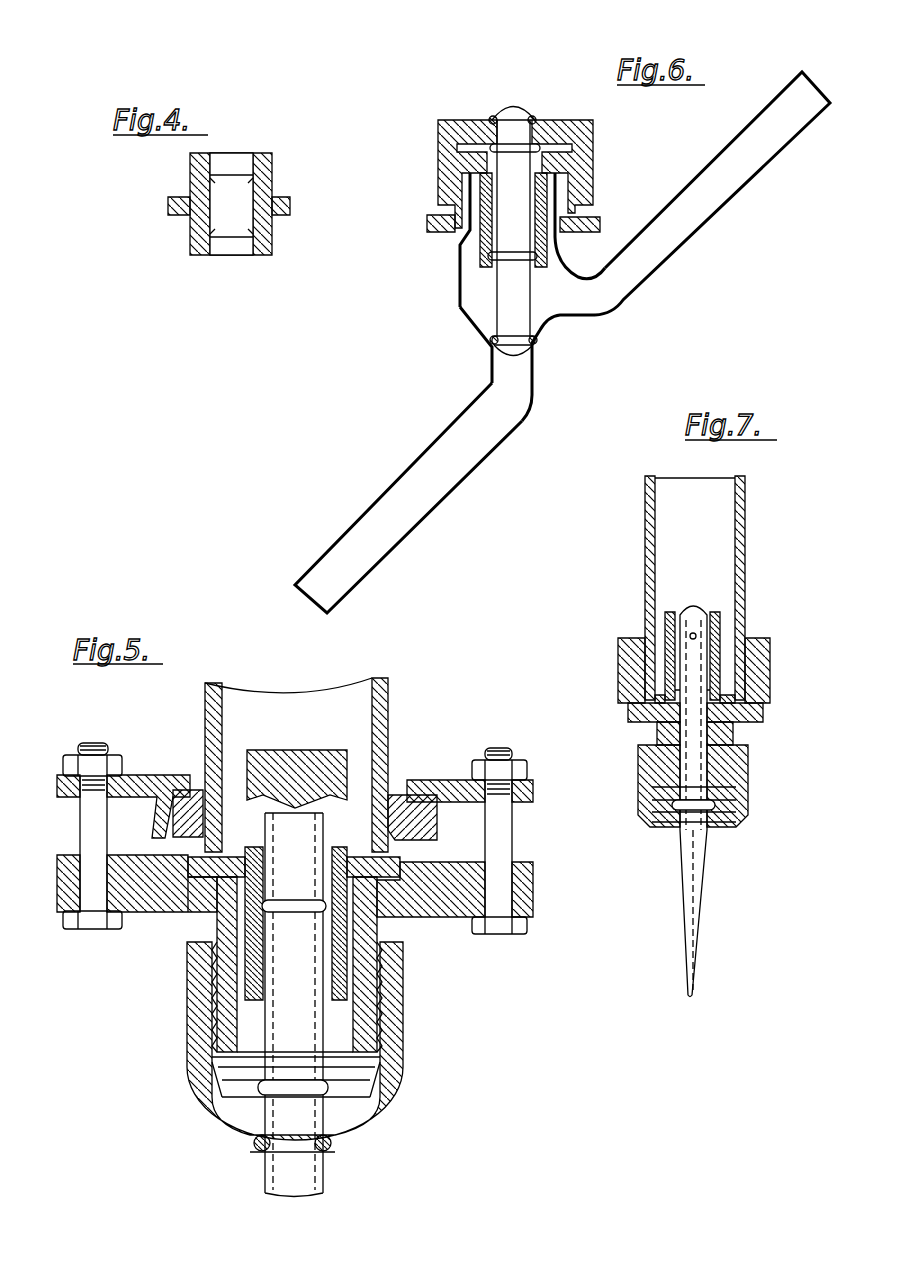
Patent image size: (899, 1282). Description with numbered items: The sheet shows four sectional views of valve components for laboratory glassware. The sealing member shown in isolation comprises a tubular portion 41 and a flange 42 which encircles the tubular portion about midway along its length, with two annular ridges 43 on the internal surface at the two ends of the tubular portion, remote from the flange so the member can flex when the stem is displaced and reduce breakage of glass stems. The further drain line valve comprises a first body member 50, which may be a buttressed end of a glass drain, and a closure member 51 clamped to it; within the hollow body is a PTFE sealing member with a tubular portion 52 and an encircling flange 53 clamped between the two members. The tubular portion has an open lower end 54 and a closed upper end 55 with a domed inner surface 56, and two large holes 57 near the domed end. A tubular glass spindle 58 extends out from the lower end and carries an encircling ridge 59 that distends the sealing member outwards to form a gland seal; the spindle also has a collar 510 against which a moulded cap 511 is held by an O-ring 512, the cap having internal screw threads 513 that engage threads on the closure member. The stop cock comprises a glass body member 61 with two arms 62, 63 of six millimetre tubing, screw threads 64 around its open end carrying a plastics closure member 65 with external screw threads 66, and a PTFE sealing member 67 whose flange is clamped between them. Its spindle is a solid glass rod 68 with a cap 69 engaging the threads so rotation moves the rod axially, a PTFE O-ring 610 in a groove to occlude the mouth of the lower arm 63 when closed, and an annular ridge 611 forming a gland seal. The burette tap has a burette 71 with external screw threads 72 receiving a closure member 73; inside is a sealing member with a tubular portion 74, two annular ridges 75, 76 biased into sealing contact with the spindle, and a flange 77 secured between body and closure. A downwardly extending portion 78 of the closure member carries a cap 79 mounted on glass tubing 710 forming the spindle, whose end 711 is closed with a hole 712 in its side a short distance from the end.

In FIG. 4, the tubular portion 41 is at (200, 227).
In FIG. 4, the flange 42 is at (266, 203).
In FIG. 4, the annular ridges 43 is at (232, 172).
In FIG. 5, the first body member 50 is at (389, 757).
In FIG. 5, the closure member 51 is at (450, 893).
In FIG. 5, the tubular portion 52 is at (348, 980).
In FIG. 5, the encircling flange 53 is at (227, 863).
In FIG. 5, the open lower end 54 is at (243, 1002).
In FIG. 5, the closed upper end 55 is at (325, 757).
In FIG. 5, the domed inner surface 56 is at (293, 803).
In FIG. 5, the large holes 57 is at (396, 775).
In FIG. 5, the tubular glass spindle 58 is at (308, 1173).
In FIG. 5, the encircling ridge 59 is at (302, 917).
In FIG. 5, the collar 510 is at (312, 1088).
In FIG. 5, the moulded cap 511 is at (230, 1113).
In FIG. 5, the O-ring 512 is at (257, 1148).
In FIG. 5, the internal screw threads 513 is at (212, 1073).
In FIG. 6, the glass body member 61 is at (459, 302).
In FIG. 6, the arm 62 is at (680, 238).
In FIG. 6, the lower arm 63 is at (447, 477).
In FIG. 6, the screw threads 64 is at (573, 217).
In FIG. 6, the closure member 65 is at (568, 190).
In FIG. 6, the external screw threads 66 is at (573, 167).
In FIG. 6, the PTFE sealing member 67 is at (468, 249).
In FIG. 6, the solid glass rod 68 is at (520, 302).
In FIG. 6, the cap 69 is at (545, 128).
In FIG. 6, the PTFE O-ring 610 is at (531, 342).
In FIG. 6, the annular ridge 611 is at (517, 258).
In FIG. 7, the burette 71 is at (648, 537).
In FIG. 7, the external screw threads 72 is at (640, 663).
In FIG. 7, the closure member 73 is at (760, 710).
In FIG. 7, the tubular portion 74 is at (717, 637).
In FIG. 7, the annular ridge 75 is at (715, 622).
In FIG. 7, the annular ridge 76 is at (693, 690).
In FIG. 7, the flange 77 is at (657, 707).
In FIG. 7, the downwardly extending portion 78 is at (720, 757).
In FIG. 7, the cap 79 is at (657, 780).
In FIG. 7, the glass tubing 710 is at (702, 850).
In FIG. 7, the end 711 is at (698, 603).
In FIG. 7, the hole 712 is at (670, 633).